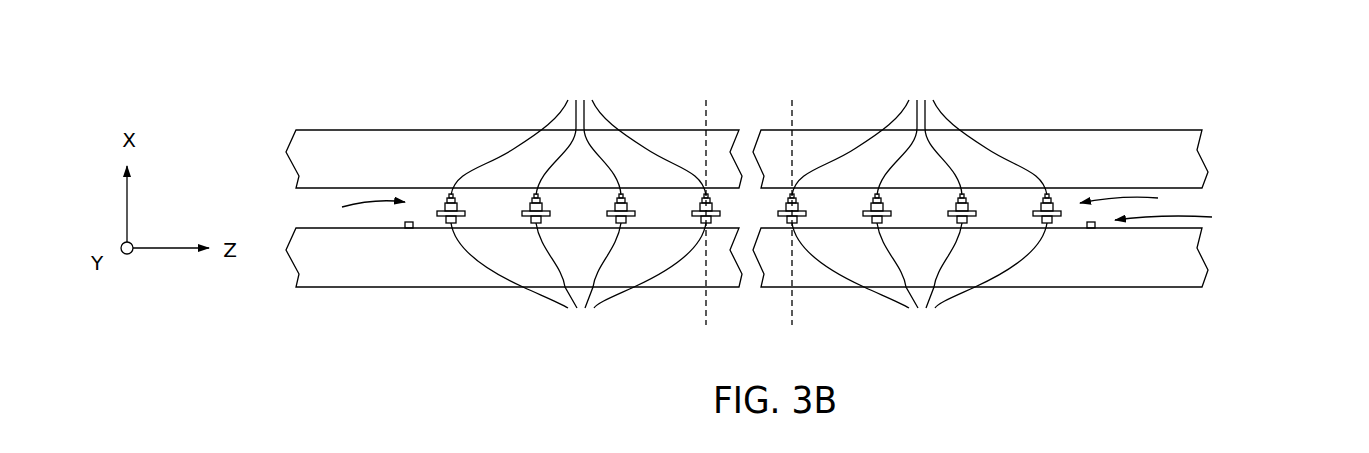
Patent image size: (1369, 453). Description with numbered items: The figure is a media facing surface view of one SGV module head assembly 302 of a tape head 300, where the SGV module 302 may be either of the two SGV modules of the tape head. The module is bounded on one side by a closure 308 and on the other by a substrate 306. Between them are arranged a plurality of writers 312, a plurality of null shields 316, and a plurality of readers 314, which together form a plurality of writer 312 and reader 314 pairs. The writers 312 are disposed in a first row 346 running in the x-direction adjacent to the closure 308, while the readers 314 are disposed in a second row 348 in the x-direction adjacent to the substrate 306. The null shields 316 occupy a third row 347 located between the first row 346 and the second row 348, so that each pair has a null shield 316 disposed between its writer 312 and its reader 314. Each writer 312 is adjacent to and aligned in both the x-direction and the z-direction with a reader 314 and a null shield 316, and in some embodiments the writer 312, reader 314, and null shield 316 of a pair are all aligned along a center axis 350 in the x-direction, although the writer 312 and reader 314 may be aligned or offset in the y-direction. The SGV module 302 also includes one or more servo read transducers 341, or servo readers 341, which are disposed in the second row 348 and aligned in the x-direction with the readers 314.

The tape head 300 is at (297, 75).
The SGV module head assembly 302 is at (425, 112).
The substrate 306 is at (1122, 267).
The closure 308 is at (747, 127).
The writers 312 is at (749, 135).
The readers 314 is at (749, 278).
The null shields 316 is at (458, 201).
The servo read transducers 341 is at (409, 228).
The first row 346 is at (1139, 203).
The third row 347 is at (352, 208).
The second row 348 is at (1183, 213).
The center axis 350 is at (752, 202).